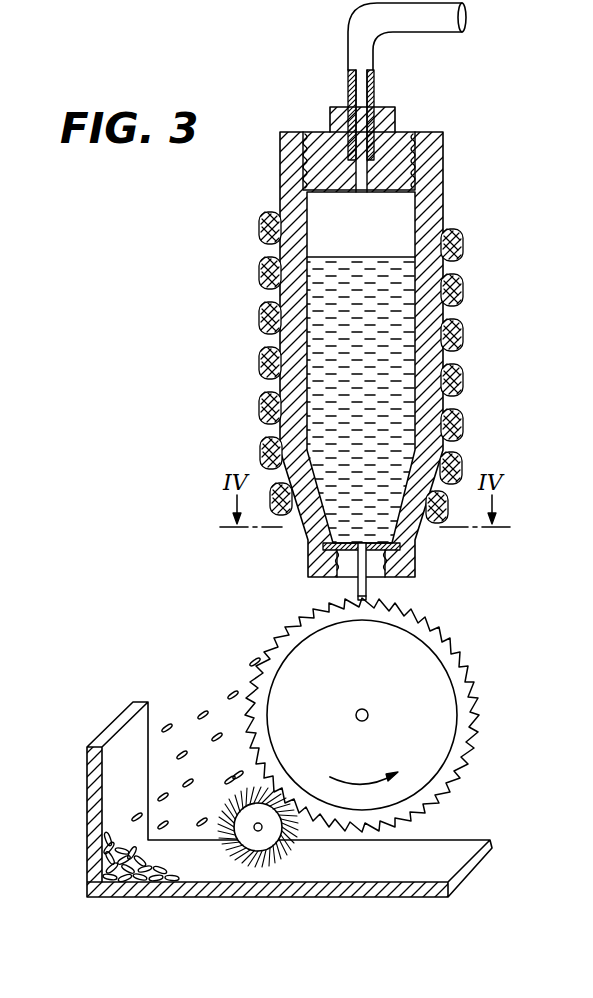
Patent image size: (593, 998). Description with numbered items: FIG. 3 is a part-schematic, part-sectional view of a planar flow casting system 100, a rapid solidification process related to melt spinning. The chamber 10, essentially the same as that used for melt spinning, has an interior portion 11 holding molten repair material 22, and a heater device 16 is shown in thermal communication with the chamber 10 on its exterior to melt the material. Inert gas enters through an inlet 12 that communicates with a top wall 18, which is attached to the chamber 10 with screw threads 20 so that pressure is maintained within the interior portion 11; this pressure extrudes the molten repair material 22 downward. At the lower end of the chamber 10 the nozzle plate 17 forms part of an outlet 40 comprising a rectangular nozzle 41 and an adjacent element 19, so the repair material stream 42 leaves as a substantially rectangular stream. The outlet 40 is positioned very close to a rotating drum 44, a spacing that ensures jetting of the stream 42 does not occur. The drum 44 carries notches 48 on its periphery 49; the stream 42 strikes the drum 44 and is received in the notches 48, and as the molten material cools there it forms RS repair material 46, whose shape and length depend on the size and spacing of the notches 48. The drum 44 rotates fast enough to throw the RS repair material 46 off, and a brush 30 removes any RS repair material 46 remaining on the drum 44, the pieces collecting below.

The planar flow casting system 100 is at (180, 253).
The chamber 10 is at (447, 178).
The interior portion 11 is at (378, 229).
The inlet 12 is at (376, 80).
The heater device 16 is at (462, 247).
The nozzle plate 17 is at (378, 590).
The top wall 18 is at (432, 132).
The nozzle insert 19 is at (398, 560).
The screw threads 20 is at (322, 140).
The molten repair material 22 is at (381, 353).
The brush 30 is at (277, 857).
The outlet 40 is at (298, 587).
The rectangular nozzle 41 is at (360, 542).
The repair material stream 42 is at (380, 593).
The rotating drum 44 is at (487, 705).
The RS repair material 46 is at (167, 727).
The notches 48 is at (465, 678).
The periphery 49 is at (455, 823).